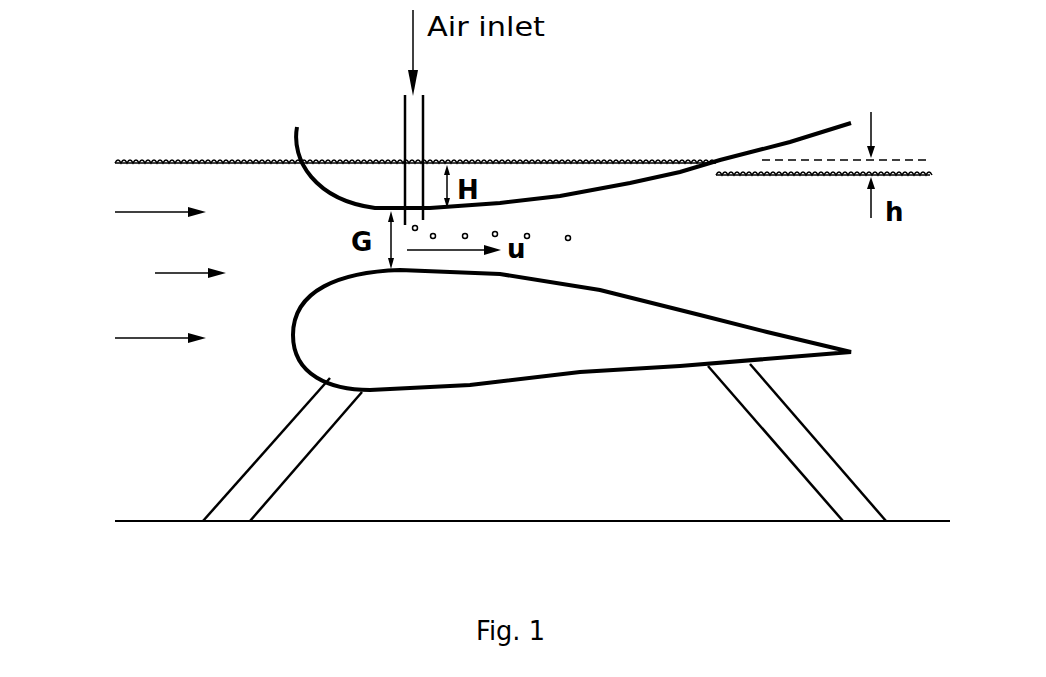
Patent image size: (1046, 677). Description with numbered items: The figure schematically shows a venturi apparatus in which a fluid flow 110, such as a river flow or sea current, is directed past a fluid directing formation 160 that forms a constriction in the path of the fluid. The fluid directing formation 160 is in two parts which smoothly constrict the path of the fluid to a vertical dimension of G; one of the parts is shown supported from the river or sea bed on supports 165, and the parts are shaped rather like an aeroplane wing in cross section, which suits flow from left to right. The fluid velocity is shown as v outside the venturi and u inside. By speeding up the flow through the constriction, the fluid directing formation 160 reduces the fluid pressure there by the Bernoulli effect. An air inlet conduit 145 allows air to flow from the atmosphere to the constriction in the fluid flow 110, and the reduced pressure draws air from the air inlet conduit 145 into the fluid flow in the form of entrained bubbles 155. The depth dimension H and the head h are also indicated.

The fluid flow 110 is at (142, 275).
The air inlet conduit 145 is at (427, 117).
The entrained bubbles 155 is at (574, 246).
The fluid directing formation 160 is at (668, 177).
The supports 165 is at (828, 462).